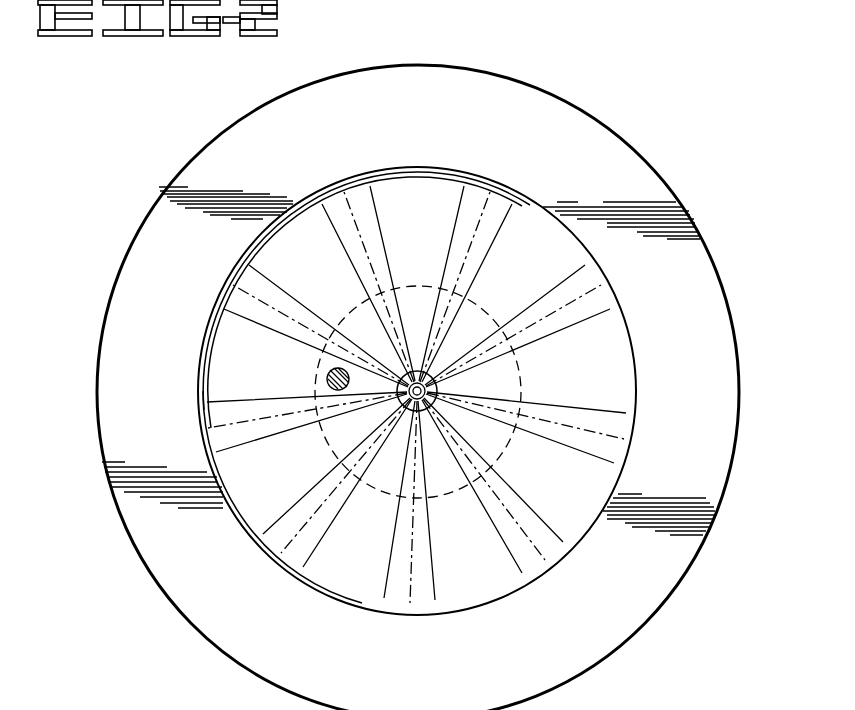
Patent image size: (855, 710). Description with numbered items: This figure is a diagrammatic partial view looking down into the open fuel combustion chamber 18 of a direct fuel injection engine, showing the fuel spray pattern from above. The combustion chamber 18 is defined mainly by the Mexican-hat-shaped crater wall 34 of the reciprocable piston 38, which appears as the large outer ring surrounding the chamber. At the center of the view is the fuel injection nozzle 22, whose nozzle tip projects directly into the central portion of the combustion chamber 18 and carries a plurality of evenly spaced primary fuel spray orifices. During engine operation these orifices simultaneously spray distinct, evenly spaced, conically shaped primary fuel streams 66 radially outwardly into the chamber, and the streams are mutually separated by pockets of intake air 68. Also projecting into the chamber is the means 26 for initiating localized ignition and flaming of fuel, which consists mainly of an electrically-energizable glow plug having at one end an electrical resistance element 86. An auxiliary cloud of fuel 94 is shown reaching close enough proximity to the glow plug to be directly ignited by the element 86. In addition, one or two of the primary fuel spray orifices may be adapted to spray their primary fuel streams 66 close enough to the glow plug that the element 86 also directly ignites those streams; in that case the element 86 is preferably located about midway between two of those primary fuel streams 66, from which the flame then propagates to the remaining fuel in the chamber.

The fuel combustion chamber 18 is at (536, 200).
The fuel injection nozzle 22 is at (439, 390).
The means for initiating localized ignition and flaming of fuel 26 is at (319, 361).
The crater wall 34 is at (572, 236).
The reciprocable piston 38 is at (700, 258).
The primary fuel streams 66 is at (378, 231).
The pockets of intake air 68 is at (295, 273).
The electrical resistance element 86 is at (327, 380).
The auxiliary cloud of fuel 94 is at (510, 372).